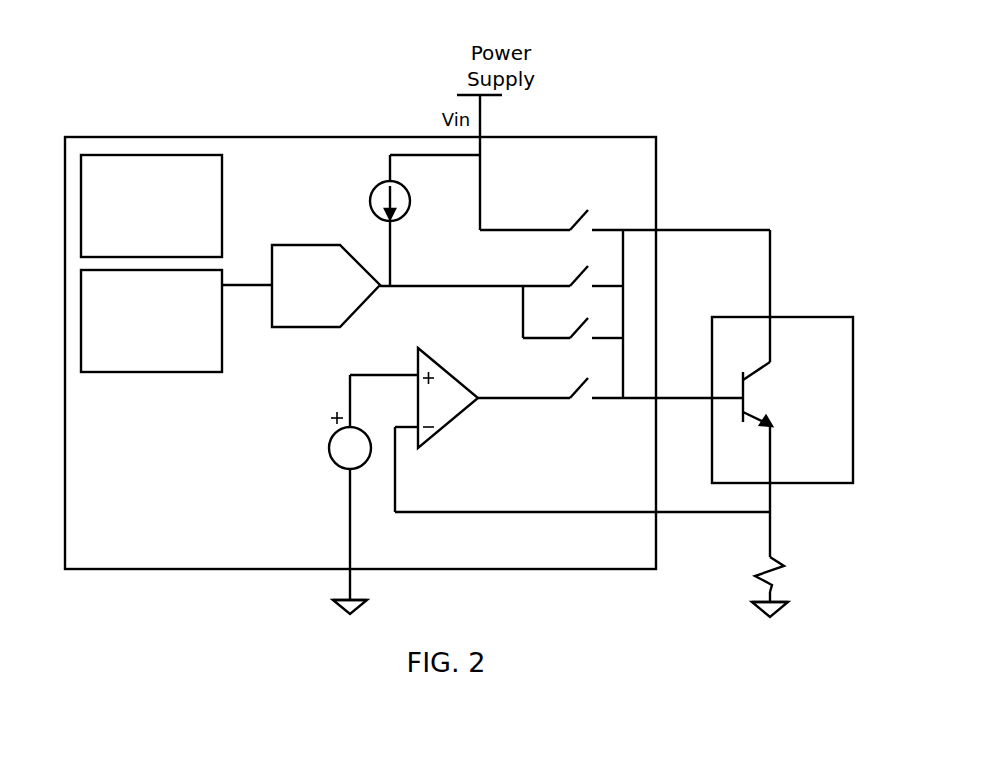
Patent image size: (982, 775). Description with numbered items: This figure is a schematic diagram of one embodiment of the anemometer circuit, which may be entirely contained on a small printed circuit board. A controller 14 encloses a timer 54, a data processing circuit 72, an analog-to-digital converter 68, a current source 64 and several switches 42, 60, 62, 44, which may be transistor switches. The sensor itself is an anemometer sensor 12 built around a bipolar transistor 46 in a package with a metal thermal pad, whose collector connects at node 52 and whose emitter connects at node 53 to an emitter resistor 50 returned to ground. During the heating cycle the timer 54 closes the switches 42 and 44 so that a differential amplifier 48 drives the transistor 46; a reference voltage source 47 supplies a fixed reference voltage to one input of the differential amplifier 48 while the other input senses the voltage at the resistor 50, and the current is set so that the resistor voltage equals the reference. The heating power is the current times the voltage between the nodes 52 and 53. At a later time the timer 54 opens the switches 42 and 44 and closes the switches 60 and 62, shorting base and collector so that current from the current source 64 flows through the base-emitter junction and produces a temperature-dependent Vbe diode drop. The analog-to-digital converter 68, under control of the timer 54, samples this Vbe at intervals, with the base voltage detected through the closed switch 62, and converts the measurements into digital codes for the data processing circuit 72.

The controller 14 is at (657, 157).
The timer 54 is at (222, 185).
The data processing circuit 72 is at (226, 355).
The analog-to-digital converter 68 is at (263, 245).
The current source 64 is at (371, 200).
The switch 42 is at (573, 213).
The switch 60 is at (572, 278).
The switch 62 is at (570, 330).
The switch 44 is at (572, 388).
The differential amplifier 48 is at (438, 365).
The reference voltage source 47 is at (325, 428).
The node 52 is at (775, 288).
The anemometer sensor 12 is at (855, 392).
The transistor 46 is at (767, 393).
The node 53 is at (776, 462).
The emitter resistor 50 is at (795, 566).